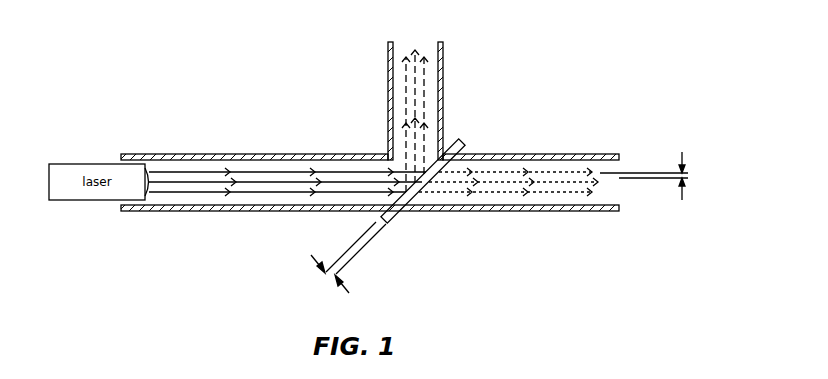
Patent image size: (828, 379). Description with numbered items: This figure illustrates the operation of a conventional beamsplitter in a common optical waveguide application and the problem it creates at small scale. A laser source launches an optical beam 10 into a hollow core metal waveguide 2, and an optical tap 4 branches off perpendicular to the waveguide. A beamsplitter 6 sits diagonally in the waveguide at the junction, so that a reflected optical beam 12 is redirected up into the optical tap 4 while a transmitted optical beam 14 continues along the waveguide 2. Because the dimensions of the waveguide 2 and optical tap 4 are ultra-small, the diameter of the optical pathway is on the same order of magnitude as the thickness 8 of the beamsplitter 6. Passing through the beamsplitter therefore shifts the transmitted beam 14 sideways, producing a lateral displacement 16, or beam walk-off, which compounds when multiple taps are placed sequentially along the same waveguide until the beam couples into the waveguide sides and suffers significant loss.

The waveguide 2 is at (242, 155).
The optical tap 4 is at (388, 87).
The beamsplitter 6 is at (401, 209).
The thickness 8 is at (322, 274).
The laser beam 10 is at (263, 192).
The reflected beam 12 is at (427, 82).
The transmitted beam 14 is at (512, 196).
The lateral displacement 16 is at (688, 176).